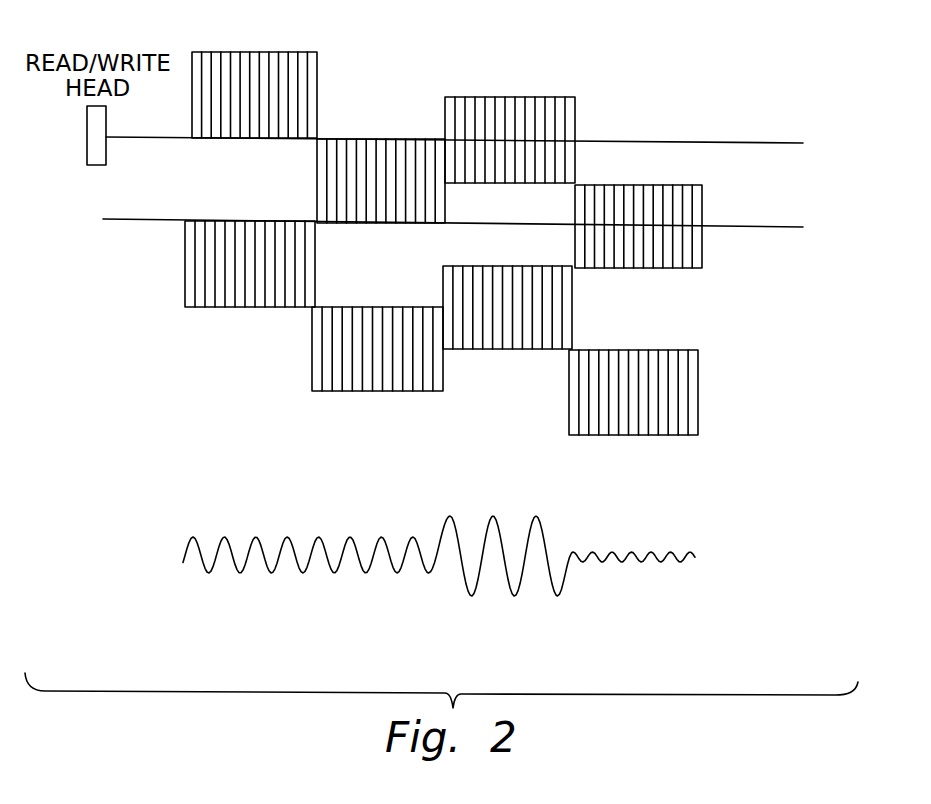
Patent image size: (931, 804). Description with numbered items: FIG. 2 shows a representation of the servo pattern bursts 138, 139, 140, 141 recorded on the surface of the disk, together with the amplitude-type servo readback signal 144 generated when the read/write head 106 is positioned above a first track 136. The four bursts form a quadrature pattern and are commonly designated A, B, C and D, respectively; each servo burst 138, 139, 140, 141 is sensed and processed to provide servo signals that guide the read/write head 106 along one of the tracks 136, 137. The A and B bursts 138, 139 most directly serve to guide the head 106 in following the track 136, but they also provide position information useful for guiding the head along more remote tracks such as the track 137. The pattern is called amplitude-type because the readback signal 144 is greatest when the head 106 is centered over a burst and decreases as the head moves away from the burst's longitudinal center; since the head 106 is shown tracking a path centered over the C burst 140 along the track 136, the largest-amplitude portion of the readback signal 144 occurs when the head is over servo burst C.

The read/write head 106 is at (92, 167).
The first track 136 is at (760, 142).
The track 137 is at (760, 225).
The servo burst A 138 is at (297, 50).
The servo burst B 139 is at (317, 179).
The servo burst C 140 is at (551, 95).
The servo burst D 141 is at (702, 258).
The servo readback signal 144 is at (235, 483).